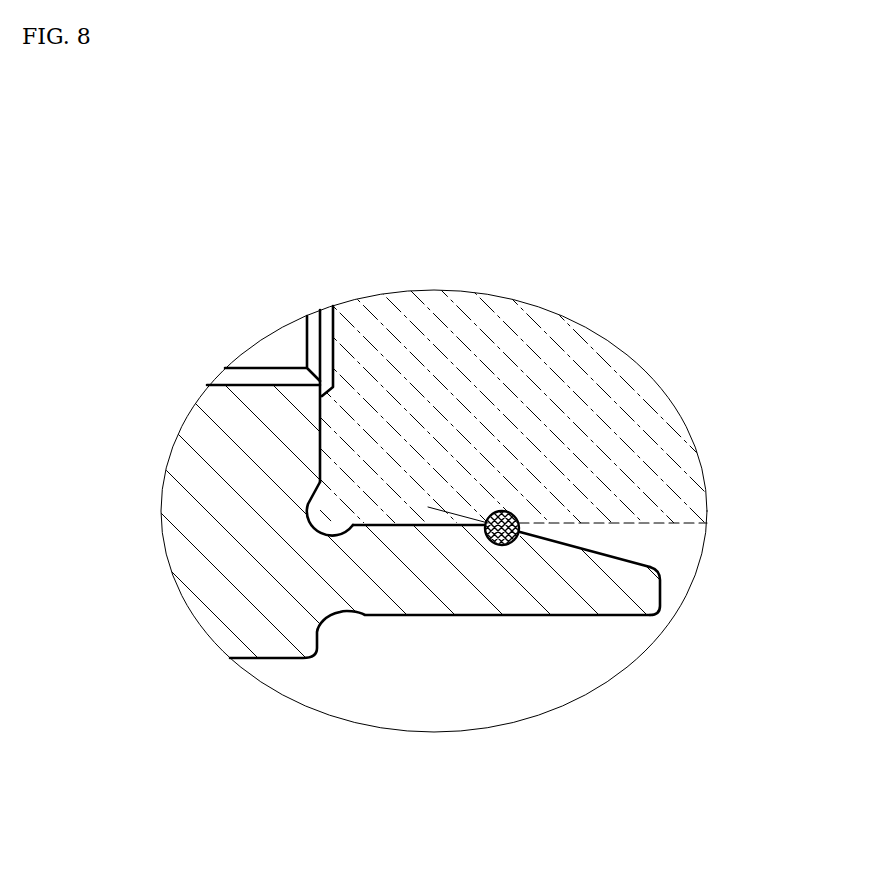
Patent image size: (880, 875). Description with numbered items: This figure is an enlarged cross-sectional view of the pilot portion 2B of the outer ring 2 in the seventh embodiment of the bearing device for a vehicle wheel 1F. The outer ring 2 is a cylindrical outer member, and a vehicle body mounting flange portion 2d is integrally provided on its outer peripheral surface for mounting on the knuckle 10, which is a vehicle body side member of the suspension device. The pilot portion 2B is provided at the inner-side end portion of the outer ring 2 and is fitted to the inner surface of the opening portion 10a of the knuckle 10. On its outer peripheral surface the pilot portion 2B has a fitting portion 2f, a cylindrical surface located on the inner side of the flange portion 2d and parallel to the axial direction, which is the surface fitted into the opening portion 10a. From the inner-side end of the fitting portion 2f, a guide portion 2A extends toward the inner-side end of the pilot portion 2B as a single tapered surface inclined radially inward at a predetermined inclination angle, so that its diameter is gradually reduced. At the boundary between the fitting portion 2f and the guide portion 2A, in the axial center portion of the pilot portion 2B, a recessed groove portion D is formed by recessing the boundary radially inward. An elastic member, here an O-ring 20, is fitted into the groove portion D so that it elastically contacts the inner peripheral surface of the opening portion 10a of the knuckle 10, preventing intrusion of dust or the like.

The bearing device for a vehicle wheel 1F is at (414, 505).
The outer ring 2 is at (219, 564).
The vehicle body mounting flange portion 2d is at (243, 427).
The fitting portion 2f is at (387, 525).
The guide portion 2A is at (598, 528).
The pilot portion 2B is at (687, 566).
The knuckle 10 is at (558, 453).
The opening portion 10a is at (688, 530).
The O-ring 20 is at (503, 511).
The groove portion D is at (515, 544).